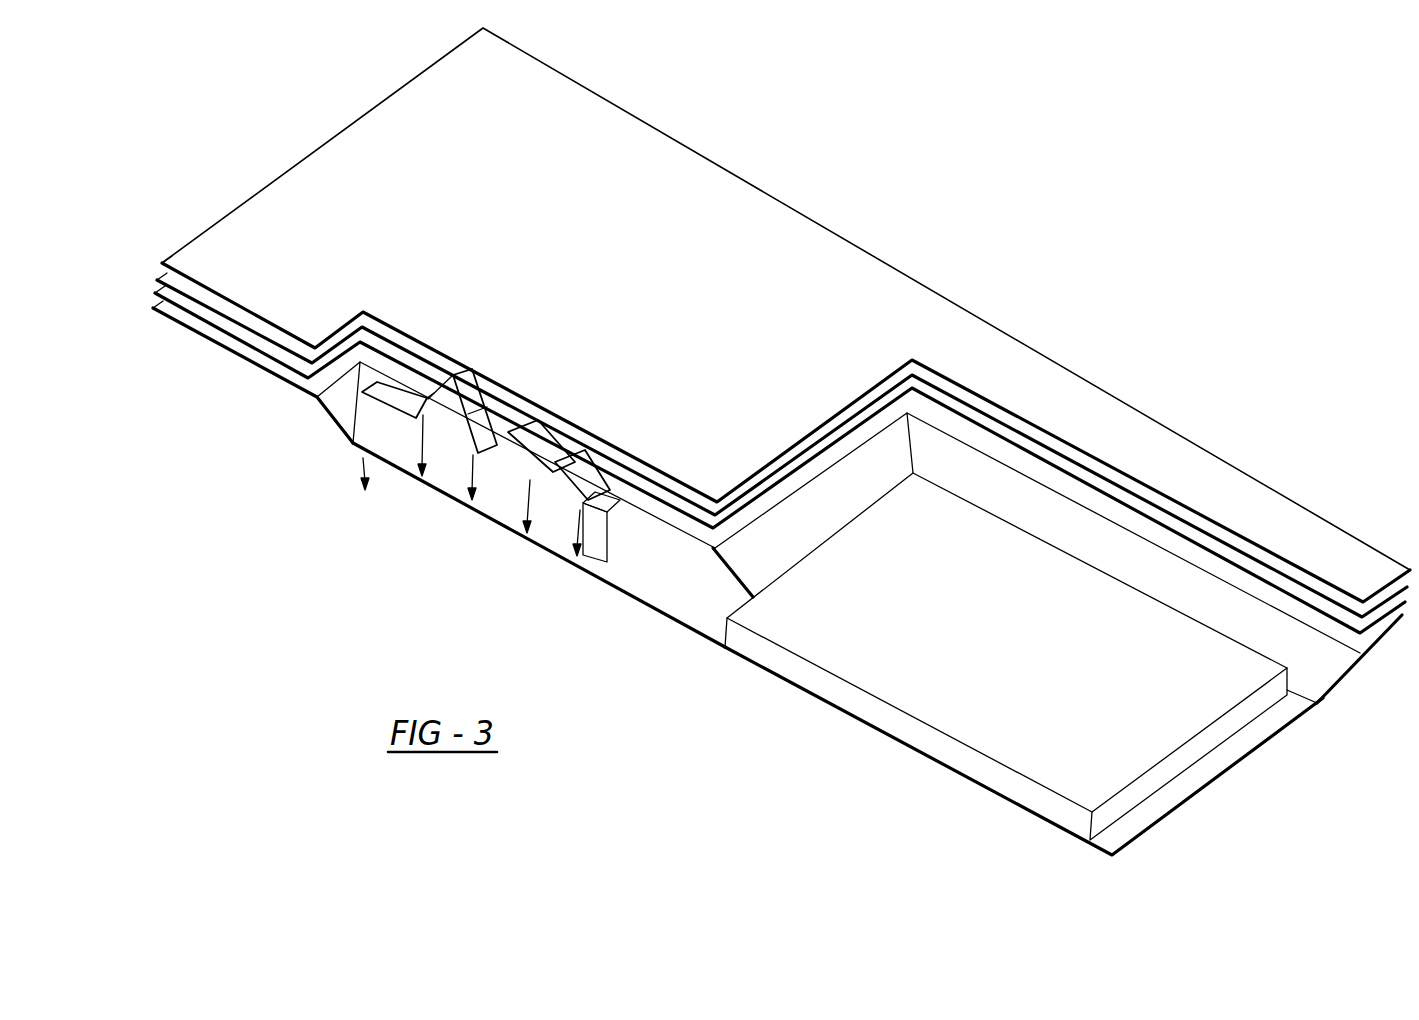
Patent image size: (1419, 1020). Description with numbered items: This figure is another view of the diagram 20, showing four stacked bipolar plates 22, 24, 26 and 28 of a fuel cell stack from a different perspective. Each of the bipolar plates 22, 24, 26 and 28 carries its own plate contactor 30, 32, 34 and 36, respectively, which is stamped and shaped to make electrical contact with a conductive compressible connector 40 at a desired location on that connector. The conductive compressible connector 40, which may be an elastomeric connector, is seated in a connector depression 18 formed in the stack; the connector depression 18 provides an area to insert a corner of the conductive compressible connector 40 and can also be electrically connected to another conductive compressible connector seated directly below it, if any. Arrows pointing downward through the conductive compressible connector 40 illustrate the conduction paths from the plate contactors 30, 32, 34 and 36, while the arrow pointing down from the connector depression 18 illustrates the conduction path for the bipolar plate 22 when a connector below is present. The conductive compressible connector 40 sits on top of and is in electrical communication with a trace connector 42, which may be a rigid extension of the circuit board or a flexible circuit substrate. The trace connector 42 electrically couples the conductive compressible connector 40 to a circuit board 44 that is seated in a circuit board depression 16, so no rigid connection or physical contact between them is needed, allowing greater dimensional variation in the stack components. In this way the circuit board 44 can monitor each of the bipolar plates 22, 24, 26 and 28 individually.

The circuit board depression 16 is at (1297, 700).
The connector depression 18 is at (352, 441).
The diagram 20 is at (1050, 207).
The bipolar plate 22 is at (268, 372).
The bipolar plate 24 is at (232, 338).
The bipolar plate 26 is at (186, 311).
The bipolar plate 28 is at (183, 263).
The plate contactor 30 is at (562, 510).
The plate contactor 32 is at (495, 493).
The plate contactor 34 is at (432, 468).
The plate contactor 36 is at (400, 448).
The conductive compressible connector 40 is at (575, 568).
The trace connector 42 is at (662, 612).
The circuit board 44 is at (1128, 737).